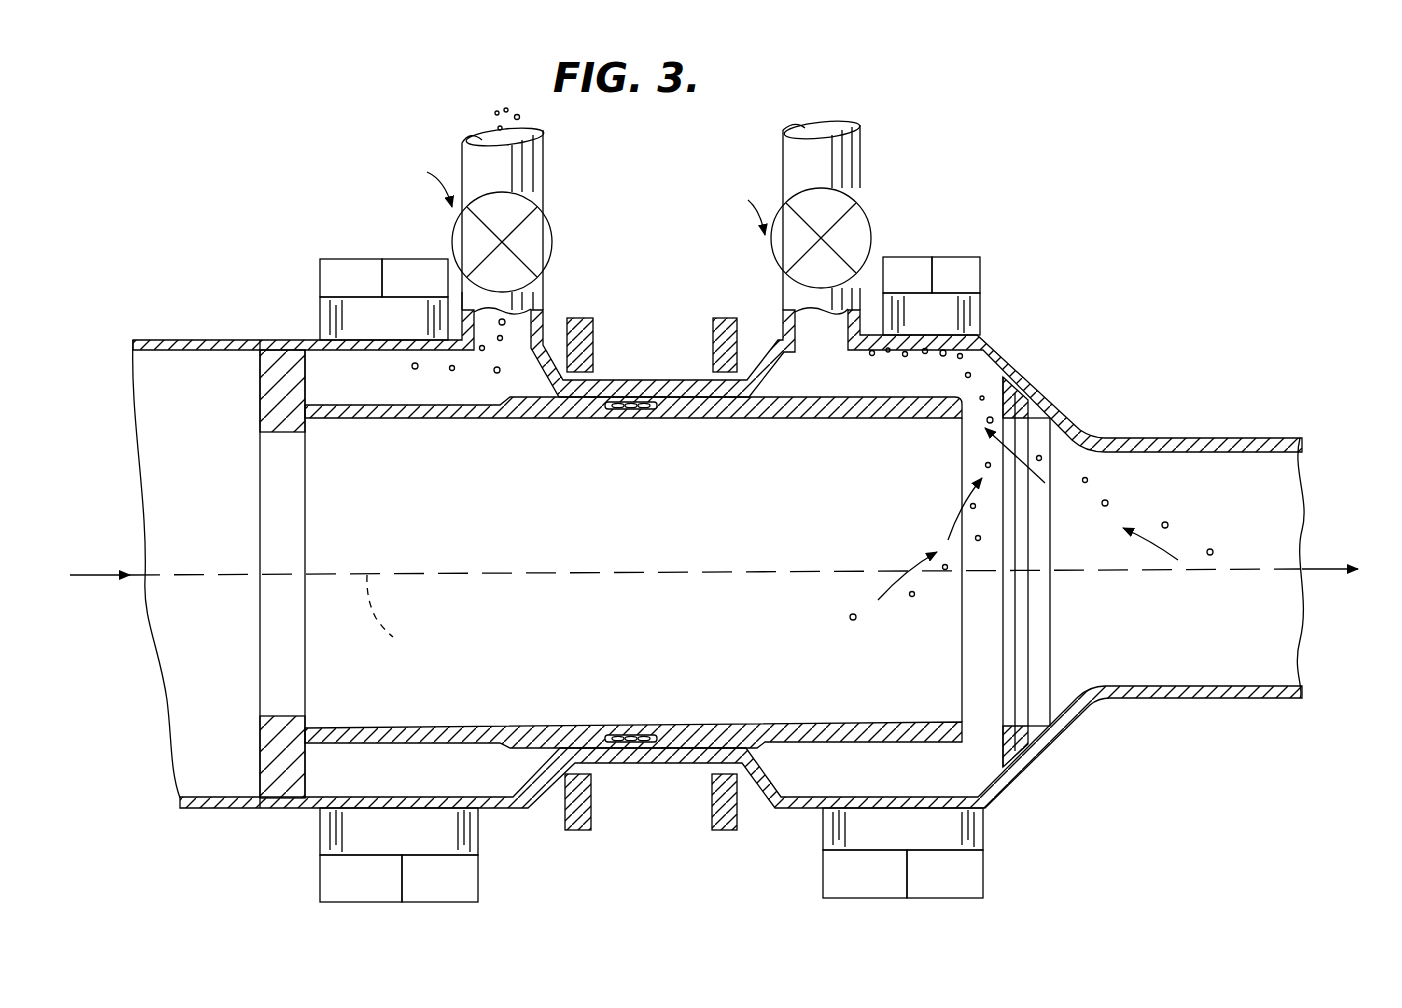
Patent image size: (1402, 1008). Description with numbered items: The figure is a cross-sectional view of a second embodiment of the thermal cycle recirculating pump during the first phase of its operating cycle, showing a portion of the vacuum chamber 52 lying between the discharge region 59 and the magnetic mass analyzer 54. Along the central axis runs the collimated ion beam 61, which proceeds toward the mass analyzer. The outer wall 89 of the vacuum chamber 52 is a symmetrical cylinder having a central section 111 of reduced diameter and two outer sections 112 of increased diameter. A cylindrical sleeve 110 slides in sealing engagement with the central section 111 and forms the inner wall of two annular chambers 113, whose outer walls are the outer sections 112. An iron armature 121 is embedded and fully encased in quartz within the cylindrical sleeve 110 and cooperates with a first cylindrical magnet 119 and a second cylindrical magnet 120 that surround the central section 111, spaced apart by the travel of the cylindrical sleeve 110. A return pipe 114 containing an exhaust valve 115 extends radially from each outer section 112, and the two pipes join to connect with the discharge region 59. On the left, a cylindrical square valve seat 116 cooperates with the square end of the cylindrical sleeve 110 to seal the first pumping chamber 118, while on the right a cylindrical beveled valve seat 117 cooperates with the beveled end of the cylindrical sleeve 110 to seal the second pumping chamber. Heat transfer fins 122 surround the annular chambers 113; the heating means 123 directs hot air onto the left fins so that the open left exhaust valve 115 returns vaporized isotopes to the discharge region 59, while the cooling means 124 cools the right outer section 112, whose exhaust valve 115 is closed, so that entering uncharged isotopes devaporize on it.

The vacuum chamber 52 is at (636, 537).
The magnetic mass analyzer 54 is at (1392, 584).
The discharge region 59 is at (64, 589).
The collimated ion beam 61 is at (394, 611).
The outer wall 89 is at (205, 340).
The cylindrical sleeve 110 is at (485, 420).
The central section 111 is at (658, 383).
The outer section 112 is at (300, 342).
The annular chamber 113 is at (400, 391).
The return pipe 114 is at (528, 170).
The exhaust valve 115 is at (548, 230).
The cylindrical square valve seat 116 is at (320, 422).
The cylindrical beveled valve seat 117 is at (1022, 403).
The first pumping chamber 118 is at (560, 273).
The first cylindrical magnet 119 is at (595, 318).
The second cylindrical magnet 120 is at (720, 318).
The iron armature 121 is at (630, 410).
The heat transfer fins 122 is at (405, 331).
The heating means 123 is at (352, 272).
The cooling means 124 is at (403, 272).